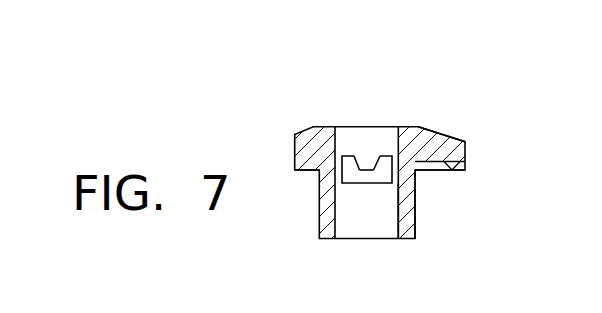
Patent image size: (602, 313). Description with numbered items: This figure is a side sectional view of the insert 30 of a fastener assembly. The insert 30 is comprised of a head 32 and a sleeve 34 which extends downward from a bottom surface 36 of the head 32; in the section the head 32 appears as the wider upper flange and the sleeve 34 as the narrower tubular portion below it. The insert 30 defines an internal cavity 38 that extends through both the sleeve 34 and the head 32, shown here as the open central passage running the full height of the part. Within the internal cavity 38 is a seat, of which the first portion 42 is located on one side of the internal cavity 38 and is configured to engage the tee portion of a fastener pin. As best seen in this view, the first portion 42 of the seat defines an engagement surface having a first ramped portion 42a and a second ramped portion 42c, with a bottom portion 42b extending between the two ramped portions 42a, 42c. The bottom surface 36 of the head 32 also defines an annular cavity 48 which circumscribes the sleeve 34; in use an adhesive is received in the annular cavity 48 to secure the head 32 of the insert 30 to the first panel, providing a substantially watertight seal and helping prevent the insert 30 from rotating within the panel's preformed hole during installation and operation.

The insert 30 is at (278, 58).
The head 32 is at (433, 130).
The sleeve 34 is at (415, 200).
The bottom surface 36 is at (459, 171).
The internal cavity 38 is at (396, 215).
The first portion 42 is at (363, 184).
The first ramped portion 42a is at (378, 156).
The bottom portion 42b is at (367, 170).
The second ramped portion 42c is at (355, 157).
The annular cavity 48 is at (307, 166).